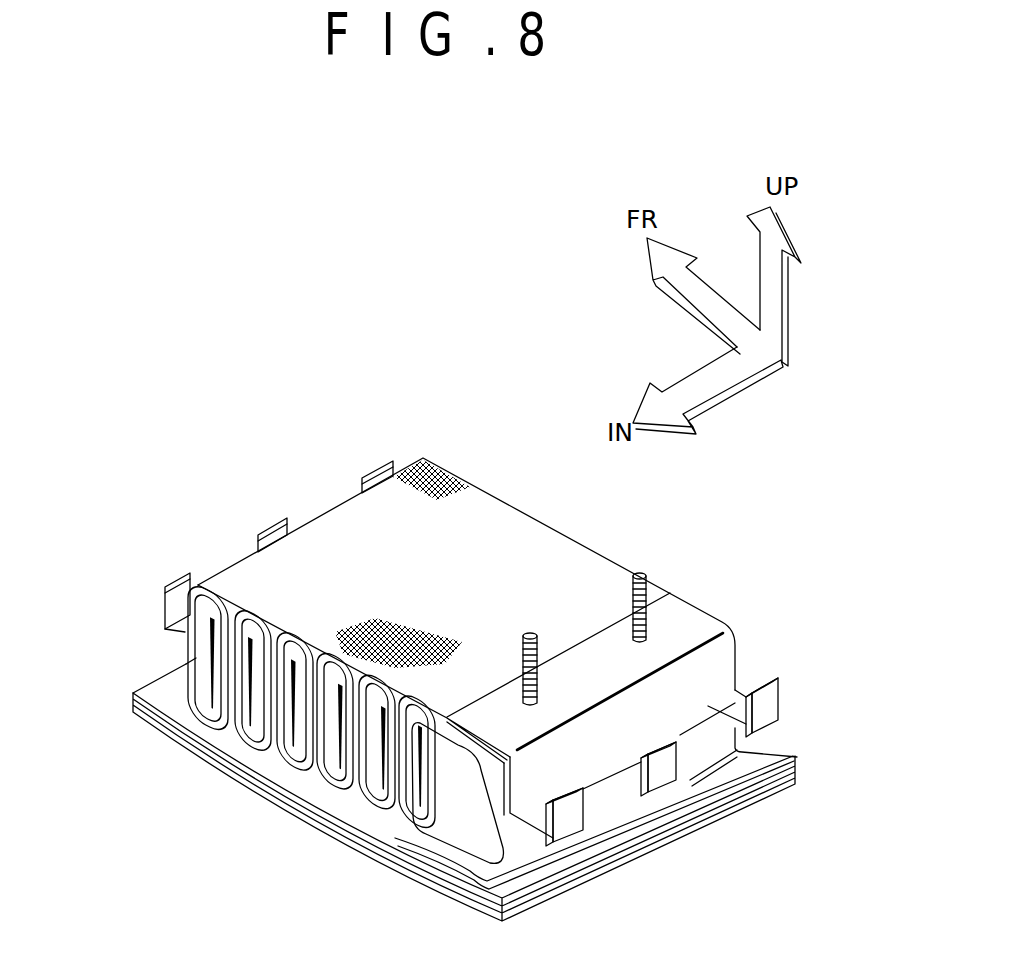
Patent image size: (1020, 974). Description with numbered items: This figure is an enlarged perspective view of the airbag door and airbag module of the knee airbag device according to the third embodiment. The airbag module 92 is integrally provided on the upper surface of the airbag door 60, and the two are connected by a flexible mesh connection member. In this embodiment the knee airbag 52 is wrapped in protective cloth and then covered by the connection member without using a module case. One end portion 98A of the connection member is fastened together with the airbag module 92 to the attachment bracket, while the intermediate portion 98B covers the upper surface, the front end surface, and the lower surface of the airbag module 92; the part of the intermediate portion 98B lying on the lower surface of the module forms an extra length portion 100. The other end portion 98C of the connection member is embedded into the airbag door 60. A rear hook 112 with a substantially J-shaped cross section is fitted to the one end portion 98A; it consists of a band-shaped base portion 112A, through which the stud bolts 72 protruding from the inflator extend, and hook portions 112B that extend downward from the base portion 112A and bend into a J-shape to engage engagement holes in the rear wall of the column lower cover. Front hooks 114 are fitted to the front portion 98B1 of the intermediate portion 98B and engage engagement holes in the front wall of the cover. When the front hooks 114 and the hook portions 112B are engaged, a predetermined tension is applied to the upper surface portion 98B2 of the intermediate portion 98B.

The knee airbag 52 is at (313, 773).
The airbag door 60 is at (353, 850).
The stud bolts 72 is at (645, 578).
The airbag module 92 is at (602, 522).
The one end portion of connection member 98A is at (460, 752).
The intermediate portion of connection member 98B is at (290, 607).
The front portion of intermediate portion 98B1 is at (187, 657).
The upper surface portion of intermediate portion 98B2 is at (463, 530).
The other end portion of connection member 98C is at (540, 868).
The extra length portion 100 is at (243, 743).
The rear hook 112 is at (672, 719).
The base portion 112A is at (690, 615).
The hook portions 112B is at (767, 707).
The front hooks 114 is at (363, 474).